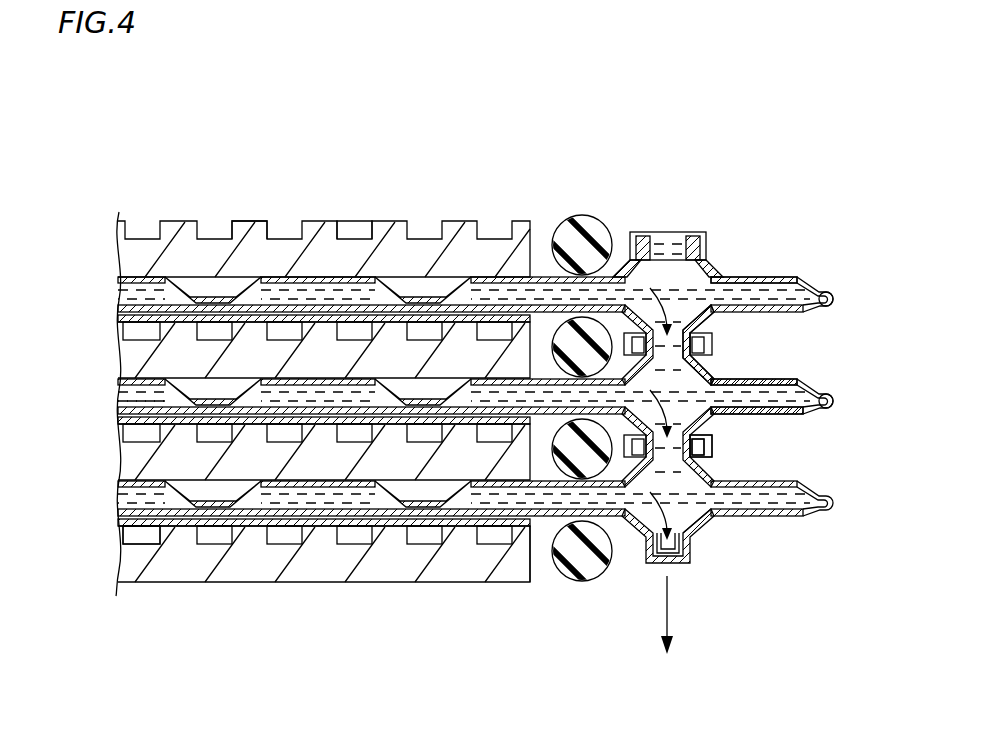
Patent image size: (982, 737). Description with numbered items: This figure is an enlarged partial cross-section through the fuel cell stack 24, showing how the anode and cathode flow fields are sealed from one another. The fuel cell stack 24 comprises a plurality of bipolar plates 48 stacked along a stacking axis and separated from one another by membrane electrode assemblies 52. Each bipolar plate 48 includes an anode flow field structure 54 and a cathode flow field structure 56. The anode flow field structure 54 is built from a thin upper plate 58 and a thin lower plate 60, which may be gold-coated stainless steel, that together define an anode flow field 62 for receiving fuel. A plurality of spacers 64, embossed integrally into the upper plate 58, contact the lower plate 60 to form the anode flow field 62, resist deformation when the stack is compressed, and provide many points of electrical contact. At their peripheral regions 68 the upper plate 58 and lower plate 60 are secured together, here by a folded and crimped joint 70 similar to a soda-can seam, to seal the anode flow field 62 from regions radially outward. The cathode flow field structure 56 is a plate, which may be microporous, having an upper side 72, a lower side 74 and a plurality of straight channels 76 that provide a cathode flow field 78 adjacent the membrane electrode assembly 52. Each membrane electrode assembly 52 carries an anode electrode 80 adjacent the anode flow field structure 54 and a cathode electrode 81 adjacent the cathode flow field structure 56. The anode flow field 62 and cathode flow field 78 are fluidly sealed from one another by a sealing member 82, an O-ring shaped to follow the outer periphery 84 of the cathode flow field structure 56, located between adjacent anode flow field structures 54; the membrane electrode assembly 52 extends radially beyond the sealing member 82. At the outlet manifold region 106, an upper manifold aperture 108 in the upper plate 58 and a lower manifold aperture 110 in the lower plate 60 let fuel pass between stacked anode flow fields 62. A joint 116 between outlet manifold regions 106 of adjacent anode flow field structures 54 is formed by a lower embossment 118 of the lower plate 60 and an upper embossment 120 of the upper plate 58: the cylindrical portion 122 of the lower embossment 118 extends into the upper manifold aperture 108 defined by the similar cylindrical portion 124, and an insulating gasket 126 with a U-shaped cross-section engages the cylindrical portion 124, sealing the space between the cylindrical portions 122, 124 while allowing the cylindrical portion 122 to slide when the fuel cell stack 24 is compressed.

The fuel cell stack 24 is at (450, 385).
The bipolar plate 48 is at (102, 226).
The membrane electrode assembly 52 is at (102, 514).
The anode flow field structure 54 is at (800, 258).
The cathode flow field structure 56 is at (468, 212).
The upper plate 58 is at (778, 377).
The lower plate 60 is at (782, 416).
The anode flow field 62 is at (143, 296).
The spacer 64 is at (175, 400).
The peripheral region 68 is at (820, 388).
The crimped joint 70 is at (858, 283).
The upper side 72 is at (240, 232).
The lower side 74 is at (198, 388).
The channel 76 is at (343, 232).
The cathode flow field 78 is at (328, 546).
The anode electrode 80 is at (122, 502).
The cathode electrode 81 is at (125, 543).
The sealing member 82 is at (572, 522).
The outer periphery 84 is at (529, 517).
The outlet manifold region 106 is at (714, 259).
The upper manifold aperture 108 is at (665, 238).
The lower manifold aperture 110 is at (690, 304).
The joint 116 is at (719, 450).
The lower embossment 118 is at (700, 532).
The upper embossment 120 is at (713, 464).
The cylindrical portion 122 is at (647, 548).
The cylindrical portion 124 is at (680, 238).
The gasket 126 is at (636, 241).